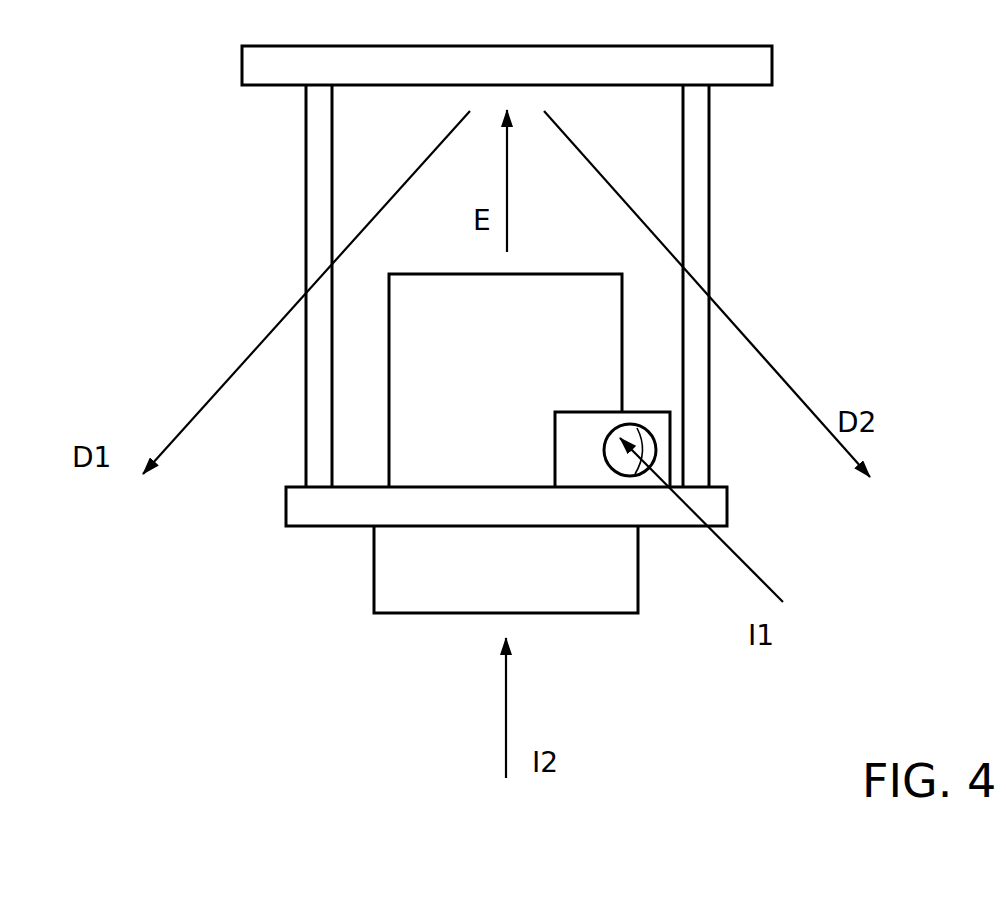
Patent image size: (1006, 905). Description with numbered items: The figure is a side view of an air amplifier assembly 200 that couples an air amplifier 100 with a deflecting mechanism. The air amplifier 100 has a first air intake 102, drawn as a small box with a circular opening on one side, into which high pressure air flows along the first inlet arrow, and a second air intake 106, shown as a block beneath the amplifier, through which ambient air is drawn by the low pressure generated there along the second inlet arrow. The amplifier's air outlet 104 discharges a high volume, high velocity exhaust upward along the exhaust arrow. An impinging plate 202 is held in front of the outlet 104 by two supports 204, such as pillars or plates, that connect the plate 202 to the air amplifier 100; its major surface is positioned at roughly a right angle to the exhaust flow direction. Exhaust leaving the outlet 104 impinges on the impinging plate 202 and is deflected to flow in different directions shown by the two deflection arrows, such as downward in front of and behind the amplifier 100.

The air amplifier 100 is at (517, 488).
The first air intake 102 is at (662, 458).
The air outlet 104 is at (495, 275).
The second air intake 106 is at (374, 613).
The air amplifier assembly 200 is at (568, 350).
The impinging plate 202 is at (242, 61).
The supports 204 is at (306, 147).